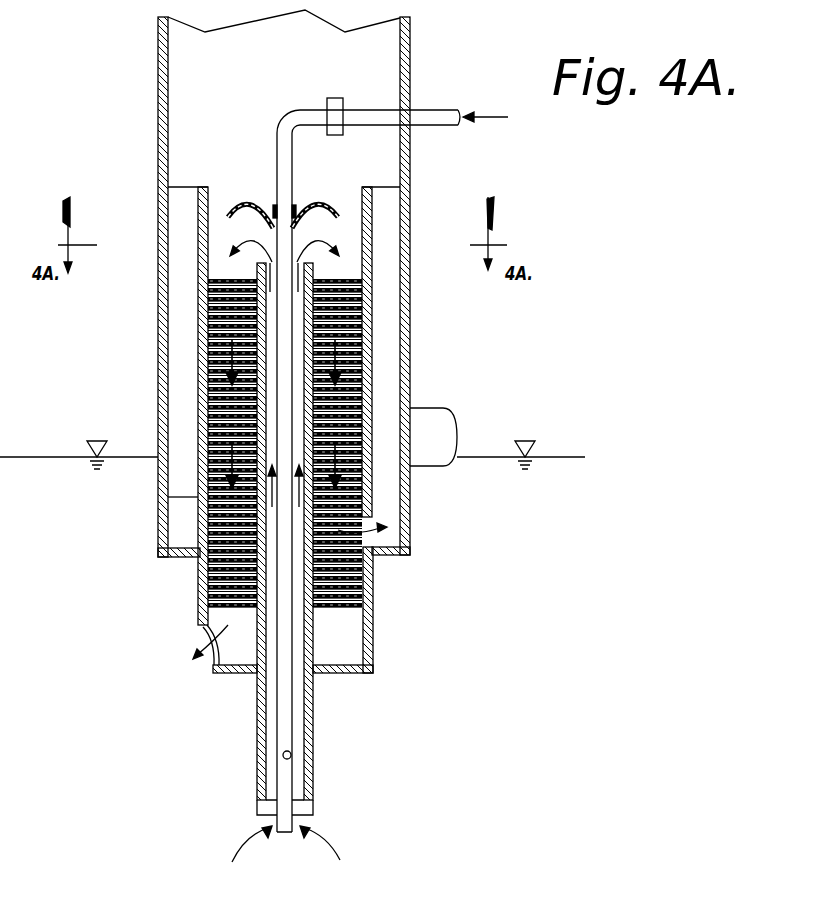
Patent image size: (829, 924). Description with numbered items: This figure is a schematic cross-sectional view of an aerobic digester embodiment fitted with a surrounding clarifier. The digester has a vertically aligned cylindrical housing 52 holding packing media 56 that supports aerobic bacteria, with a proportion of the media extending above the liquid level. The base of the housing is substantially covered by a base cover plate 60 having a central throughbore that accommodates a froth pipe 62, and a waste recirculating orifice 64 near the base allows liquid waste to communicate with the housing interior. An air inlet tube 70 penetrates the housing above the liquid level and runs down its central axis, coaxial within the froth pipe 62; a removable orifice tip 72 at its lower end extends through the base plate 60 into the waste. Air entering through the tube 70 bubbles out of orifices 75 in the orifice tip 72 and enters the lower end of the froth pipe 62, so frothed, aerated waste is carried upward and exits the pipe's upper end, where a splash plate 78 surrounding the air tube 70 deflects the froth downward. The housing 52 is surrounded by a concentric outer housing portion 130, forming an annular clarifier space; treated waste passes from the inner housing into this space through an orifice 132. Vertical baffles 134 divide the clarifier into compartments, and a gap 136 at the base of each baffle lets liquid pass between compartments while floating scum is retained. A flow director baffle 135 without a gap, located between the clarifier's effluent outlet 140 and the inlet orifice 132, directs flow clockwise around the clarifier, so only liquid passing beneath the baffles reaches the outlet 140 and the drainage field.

The cylindrical housing 52 is at (372, 342).
The packing media 56 is at (360, 397).
The base cover plate 60 is at (353, 673).
The froth pipe 62 is at (317, 757).
The waste recirculating orifice 64 is at (190, 643).
The air inlet tube 70 is at (355, 115).
The removable orifice tip 72 is at (285, 790).
The orifices 75 is at (280, 750).
The splash plate 78 is at (321, 207).
The outer housing portion 130 is at (410, 486).
The orifice 132 is at (395, 538).
The vertical baffles 134 is at (178, 345).
The flow director baffle 135 is at (378, 303).
The gap 136 is at (182, 537).
The effluent outlet 140 is at (440, 408).